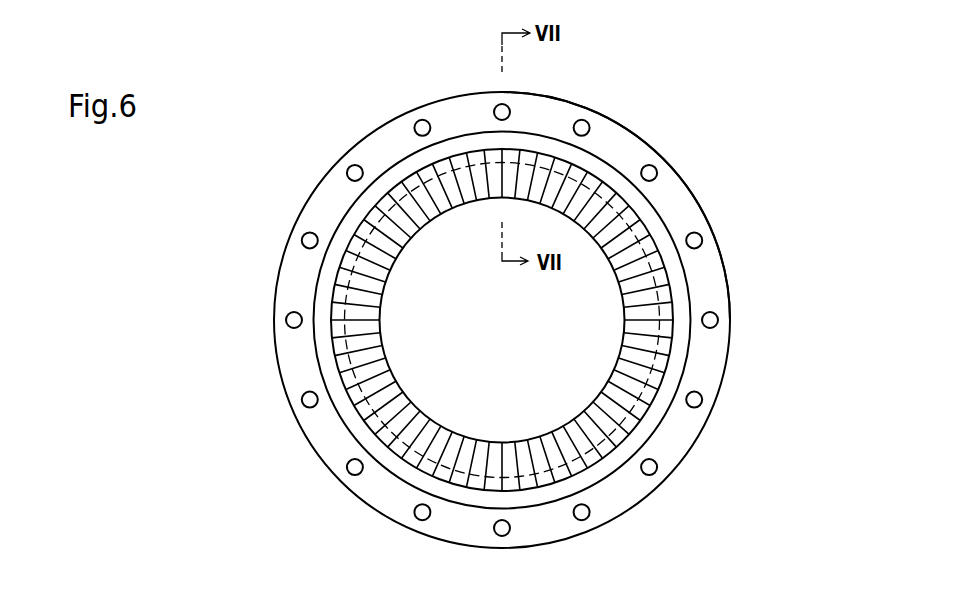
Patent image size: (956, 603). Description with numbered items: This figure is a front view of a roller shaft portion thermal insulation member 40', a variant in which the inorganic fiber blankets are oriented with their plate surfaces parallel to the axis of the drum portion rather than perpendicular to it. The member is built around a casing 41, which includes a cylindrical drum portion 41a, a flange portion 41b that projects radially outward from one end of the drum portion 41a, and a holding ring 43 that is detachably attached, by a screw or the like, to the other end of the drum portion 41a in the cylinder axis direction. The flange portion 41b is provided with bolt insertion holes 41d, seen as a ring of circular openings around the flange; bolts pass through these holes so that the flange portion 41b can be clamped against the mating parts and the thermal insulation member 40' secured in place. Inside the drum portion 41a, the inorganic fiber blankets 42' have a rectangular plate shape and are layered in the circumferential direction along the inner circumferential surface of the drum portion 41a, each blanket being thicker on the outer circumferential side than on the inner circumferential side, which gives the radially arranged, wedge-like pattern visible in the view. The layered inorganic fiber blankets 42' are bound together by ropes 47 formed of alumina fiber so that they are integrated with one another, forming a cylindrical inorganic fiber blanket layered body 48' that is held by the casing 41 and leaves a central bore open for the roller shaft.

The roller shaft portion thermal insulation member 40' is at (517, 276).
The casing 41 is at (696, 190).
The drum portion 41a is at (605, 150).
The flange portion 41b is at (673, 185).
The bolt insertion holes 41d is at (716, 313).
The inorganic fiber blankets 42' is at (502, 320).
The holding ring 43 is at (680, 362).
The ropes 47 is at (430, 460).
The inorganic fiber blanket layered body 48' is at (502, 320).